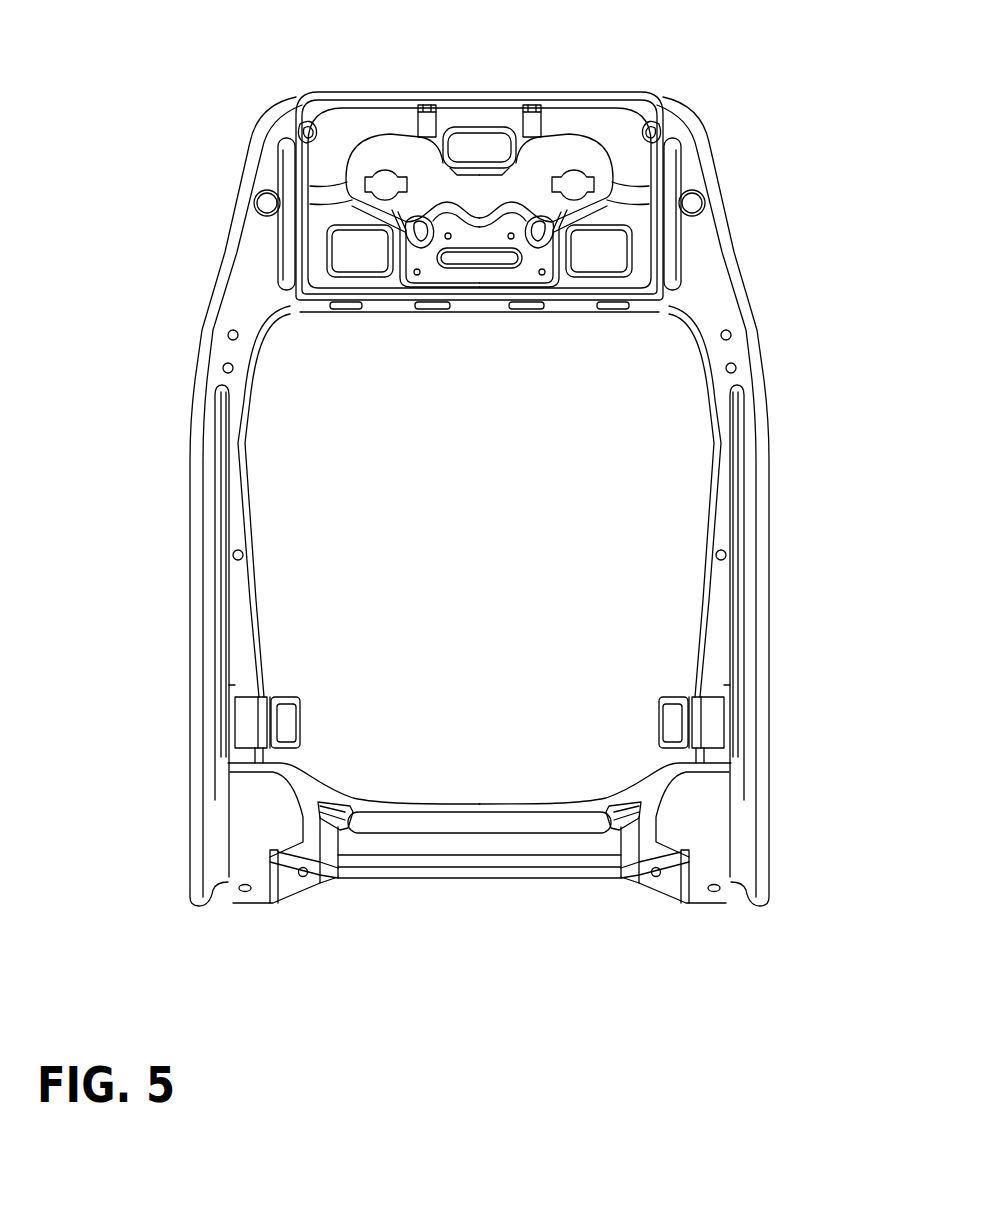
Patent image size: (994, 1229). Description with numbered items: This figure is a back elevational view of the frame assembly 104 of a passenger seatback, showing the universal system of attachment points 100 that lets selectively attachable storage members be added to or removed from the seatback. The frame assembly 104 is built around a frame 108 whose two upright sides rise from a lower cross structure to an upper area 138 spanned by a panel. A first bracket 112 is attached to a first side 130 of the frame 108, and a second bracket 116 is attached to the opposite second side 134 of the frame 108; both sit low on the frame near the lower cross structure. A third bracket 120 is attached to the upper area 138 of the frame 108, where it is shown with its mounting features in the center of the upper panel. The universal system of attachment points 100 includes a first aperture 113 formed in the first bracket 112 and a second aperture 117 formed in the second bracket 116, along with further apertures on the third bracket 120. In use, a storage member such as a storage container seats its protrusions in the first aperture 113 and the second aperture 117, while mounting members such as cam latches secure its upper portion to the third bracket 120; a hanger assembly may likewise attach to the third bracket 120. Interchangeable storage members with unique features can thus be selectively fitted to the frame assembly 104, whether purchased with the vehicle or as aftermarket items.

The universal system of attachment points 100 is at (832, 98).
The frame assembly 104 is at (209, 293).
The frame 108 is at (257, 253).
The first bracket 112 is at (252, 713).
The first aperture 113 is at (287, 720).
The second bracket 116 is at (710, 717).
The second aperture 117 is at (673, 727).
The third bracket 120 is at (465, 188).
The first side 130 is at (192, 633).
The second side 134 is at (720, 305).
The upper area 138 is at (608, 145).